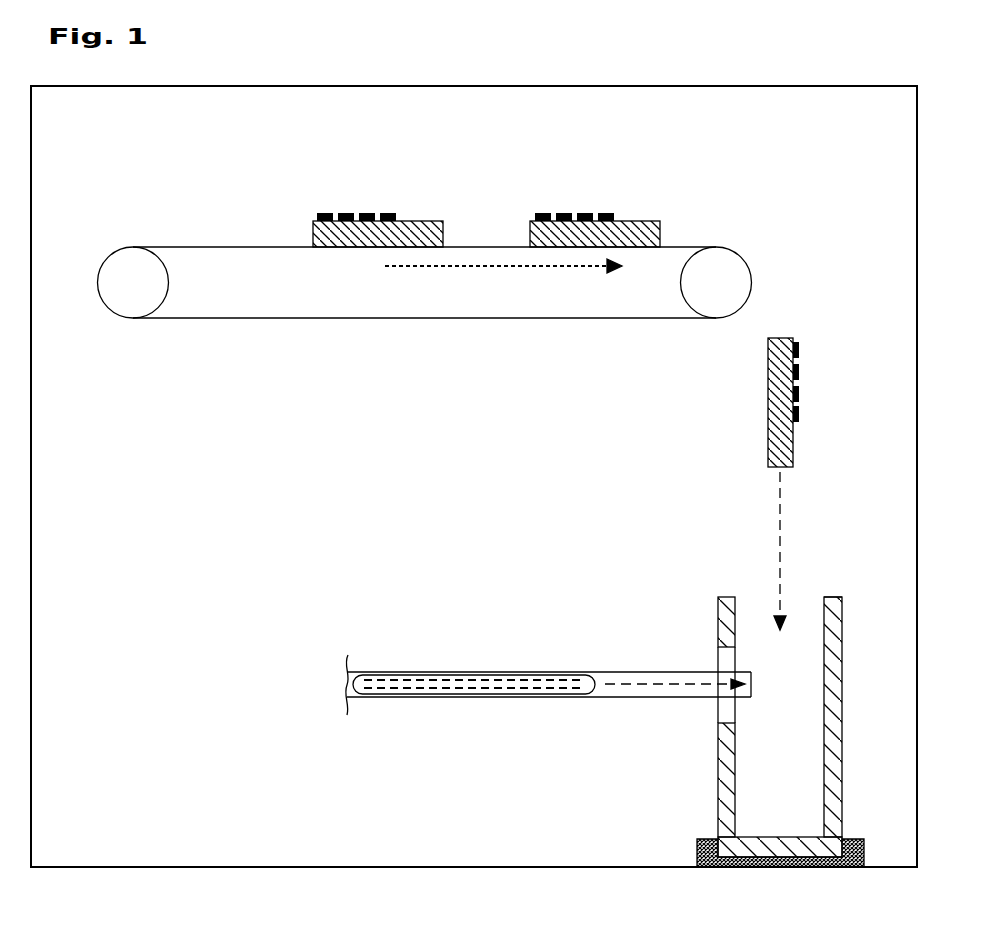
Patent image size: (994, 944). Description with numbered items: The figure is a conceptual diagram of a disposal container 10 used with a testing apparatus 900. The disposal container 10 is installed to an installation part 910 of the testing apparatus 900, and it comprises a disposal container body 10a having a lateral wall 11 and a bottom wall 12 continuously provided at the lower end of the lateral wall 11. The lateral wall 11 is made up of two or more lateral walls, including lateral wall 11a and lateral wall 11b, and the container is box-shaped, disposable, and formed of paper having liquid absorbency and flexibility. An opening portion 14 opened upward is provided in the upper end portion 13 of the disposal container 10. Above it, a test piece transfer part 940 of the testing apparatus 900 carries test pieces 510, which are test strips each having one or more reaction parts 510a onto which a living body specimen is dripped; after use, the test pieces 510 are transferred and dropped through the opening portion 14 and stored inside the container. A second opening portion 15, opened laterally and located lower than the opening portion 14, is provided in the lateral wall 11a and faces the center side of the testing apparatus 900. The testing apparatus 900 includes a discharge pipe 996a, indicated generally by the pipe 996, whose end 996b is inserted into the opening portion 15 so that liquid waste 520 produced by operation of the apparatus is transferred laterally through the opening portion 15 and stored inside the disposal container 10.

The testing apparatus 900 is at (781, 86).
The test piece transfer part 940 is at (424, 334).
The test piece 510 is at (422, 221).
The reaction part 510a is at (345, 213).
The disposal container 10 is at (760, 698).
The disposal container body 10a is at (760, 698).
The lateral wall 11 is at (764, 716).
The lateral wall 11a is at (691, 717).
The lateral wall 11b is at (840, 685).
The bottom wall 12 is at (772, 867).
The upper end portion 13 is at (830, 597).
The opening portion 14 is at (755, 607).
The opening portion 15 is at (720, 727).
The installation part 910 is at (697, 858).
The feed tube 996 is at (573, 676).
The discharge pipe 996a is at (633, 672).
The end 996b is at (760, 697).
The liquid waste 520 is at (437, 683).